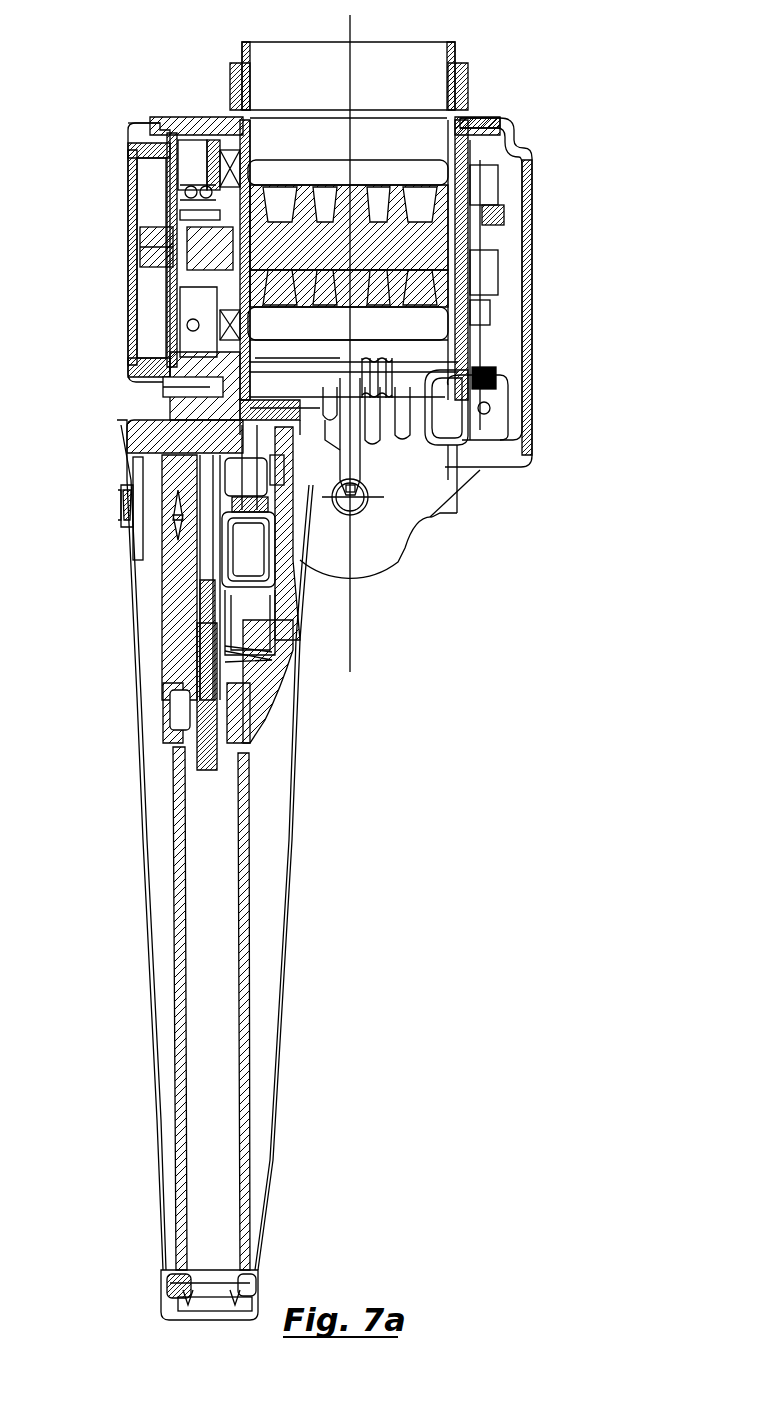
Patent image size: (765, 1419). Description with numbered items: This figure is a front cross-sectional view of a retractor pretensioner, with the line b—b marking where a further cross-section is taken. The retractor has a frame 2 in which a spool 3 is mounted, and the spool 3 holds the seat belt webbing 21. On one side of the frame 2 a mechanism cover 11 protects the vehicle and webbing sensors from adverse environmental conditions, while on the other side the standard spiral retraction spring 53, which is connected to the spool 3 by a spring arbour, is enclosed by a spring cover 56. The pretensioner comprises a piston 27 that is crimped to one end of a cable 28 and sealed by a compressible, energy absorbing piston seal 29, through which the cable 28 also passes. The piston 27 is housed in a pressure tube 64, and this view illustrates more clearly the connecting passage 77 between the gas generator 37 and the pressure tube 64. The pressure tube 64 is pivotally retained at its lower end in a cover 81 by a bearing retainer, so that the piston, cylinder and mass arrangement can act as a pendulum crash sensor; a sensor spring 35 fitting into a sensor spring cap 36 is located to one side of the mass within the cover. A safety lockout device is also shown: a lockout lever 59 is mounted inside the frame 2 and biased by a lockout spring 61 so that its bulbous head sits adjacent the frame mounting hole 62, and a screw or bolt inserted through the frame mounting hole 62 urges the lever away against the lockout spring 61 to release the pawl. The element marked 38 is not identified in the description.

The frame 2 is at (387, 560).
The spool 3 is at (388, 307).
The mechanism cover 11 is at (533, 170).
The seat belt webbing 21 is at (292, 52).
The piston 27 is at (232, 720).
The cable 28 is at (247, 745).
The piston seal 29 is at (225, 700).
The sensor spring 35 is at (126, 515).
The sensor spring cap 36 is at (121, 490).
The gas generator 37 is at (262, 568).
The contact cavity 38 is at (270, 660).
The spiral retraction spring 53 is at (188, 182).
The spring cover 56 is at (128, 333).
The lockout lever 59 is at (360, 452).
The lockout spring 61 is at (373, 410).
The frame mounting hole 62 is at (373, 500).
The pressure tube 64 is at (248, 922).
The connecting passage 77 is at (260, 632).
The cover 81 is at (273, 1160).
The section line b- b is at (456, 48).